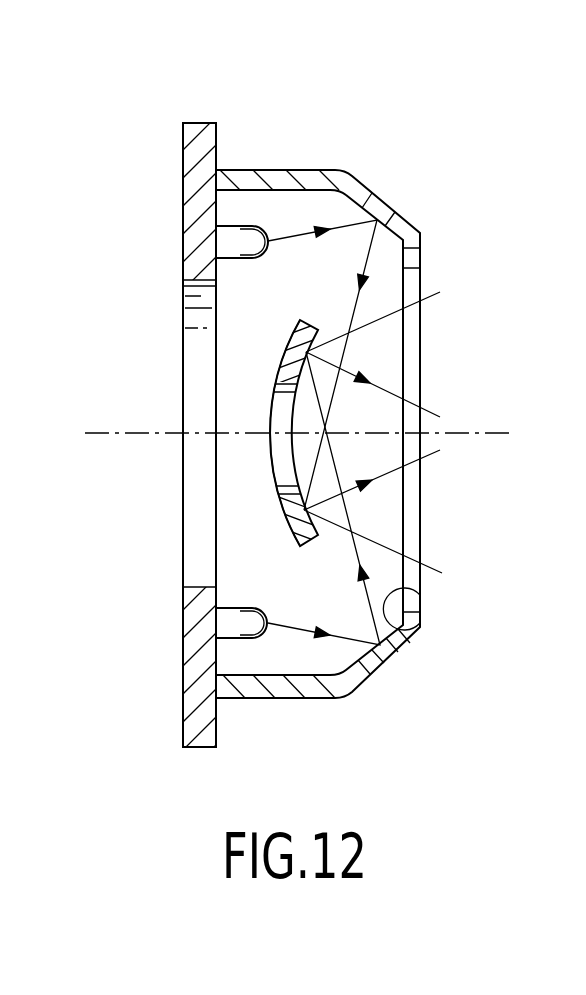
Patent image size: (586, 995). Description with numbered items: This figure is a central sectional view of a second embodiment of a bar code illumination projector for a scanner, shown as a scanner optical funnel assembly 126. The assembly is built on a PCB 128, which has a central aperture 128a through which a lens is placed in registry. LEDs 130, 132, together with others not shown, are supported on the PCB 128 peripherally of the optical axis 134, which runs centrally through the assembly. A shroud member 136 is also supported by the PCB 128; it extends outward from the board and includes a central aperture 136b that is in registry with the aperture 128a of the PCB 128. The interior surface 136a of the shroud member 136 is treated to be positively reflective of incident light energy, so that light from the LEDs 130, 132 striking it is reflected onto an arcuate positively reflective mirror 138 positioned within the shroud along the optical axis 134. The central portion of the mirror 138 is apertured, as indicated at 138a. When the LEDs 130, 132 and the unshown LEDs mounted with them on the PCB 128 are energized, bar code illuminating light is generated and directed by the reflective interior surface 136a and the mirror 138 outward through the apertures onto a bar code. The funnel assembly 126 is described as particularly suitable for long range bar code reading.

The scanner optical funnel assembly 126 is at (358, 125).
The PCB 128 is at (198, 220).
The central aperture 128a is at (198, 538).
The LED 130 is at (247, 245).
The LED 132 is at (233, 622).
The optical axis 134 is at (480, 430).
The shroud member 136 is at (368, 190).
The interior surface 136a is at (408, 588).
The central aperture 136b is at (410, 286).
The arcuate positively reflective mirror 138 is at (283, 362).
The aperture 138a is at (283, 453).